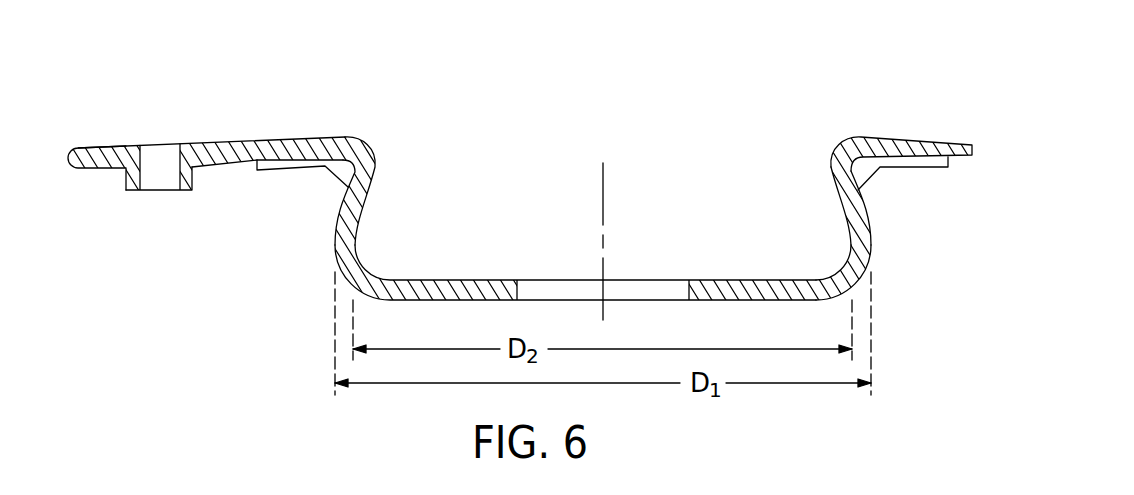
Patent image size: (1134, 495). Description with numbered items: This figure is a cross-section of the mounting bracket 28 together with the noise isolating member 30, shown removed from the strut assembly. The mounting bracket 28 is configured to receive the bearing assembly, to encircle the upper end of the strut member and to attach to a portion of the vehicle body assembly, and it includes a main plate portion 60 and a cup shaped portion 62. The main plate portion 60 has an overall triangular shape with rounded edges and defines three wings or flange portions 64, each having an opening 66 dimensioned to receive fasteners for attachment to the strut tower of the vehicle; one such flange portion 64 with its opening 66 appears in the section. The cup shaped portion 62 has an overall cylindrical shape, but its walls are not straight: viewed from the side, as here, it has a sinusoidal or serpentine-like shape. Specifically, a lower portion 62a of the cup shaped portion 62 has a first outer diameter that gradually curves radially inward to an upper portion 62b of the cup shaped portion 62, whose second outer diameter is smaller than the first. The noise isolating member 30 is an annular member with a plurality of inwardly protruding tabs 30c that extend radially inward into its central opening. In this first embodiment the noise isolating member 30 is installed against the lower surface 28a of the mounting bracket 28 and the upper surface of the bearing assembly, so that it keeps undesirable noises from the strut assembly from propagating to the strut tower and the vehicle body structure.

The mounting bracket 28 is at (271, 137).
The lower surface of the mounting bracket 28a is at (215, 165).
The noise isolating member 30 is at (918, 170).
The tab 30c is at (333, 177).
The main plate portion 60 is at (313, 137).
The cup shaped portion 62 is at (730, 301).
The lower portion of the cup shaped portion 62a is at (869, 257).
The upper portion of the cup shaped portion 62b is at (864, 202).
The flange portion 64 is at (93, 147).
The opening 66 is at (153, 173).